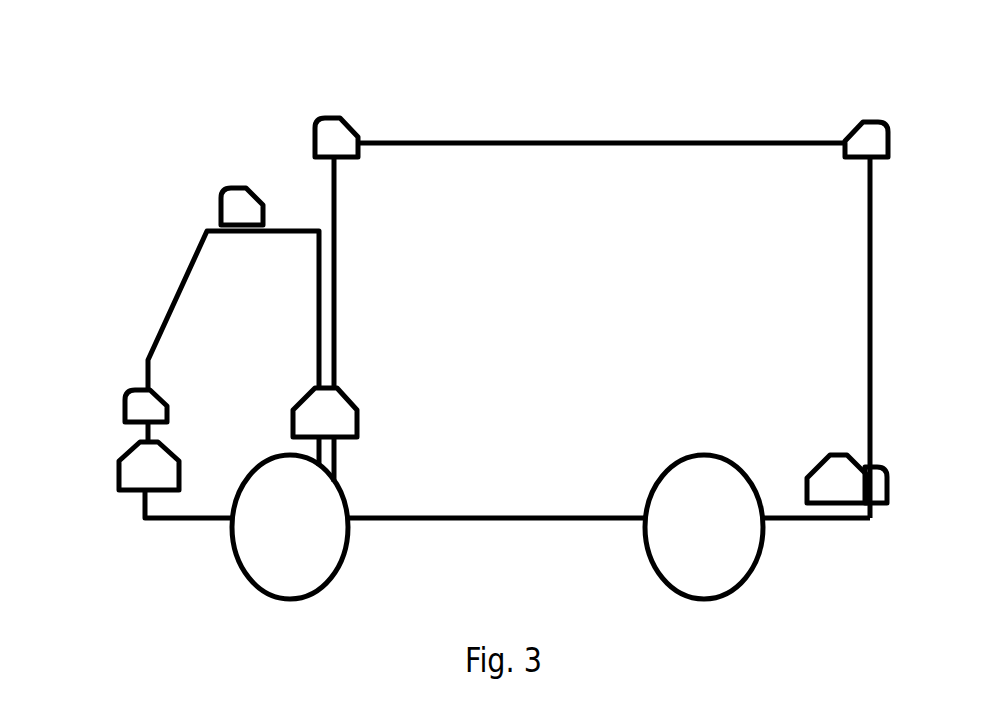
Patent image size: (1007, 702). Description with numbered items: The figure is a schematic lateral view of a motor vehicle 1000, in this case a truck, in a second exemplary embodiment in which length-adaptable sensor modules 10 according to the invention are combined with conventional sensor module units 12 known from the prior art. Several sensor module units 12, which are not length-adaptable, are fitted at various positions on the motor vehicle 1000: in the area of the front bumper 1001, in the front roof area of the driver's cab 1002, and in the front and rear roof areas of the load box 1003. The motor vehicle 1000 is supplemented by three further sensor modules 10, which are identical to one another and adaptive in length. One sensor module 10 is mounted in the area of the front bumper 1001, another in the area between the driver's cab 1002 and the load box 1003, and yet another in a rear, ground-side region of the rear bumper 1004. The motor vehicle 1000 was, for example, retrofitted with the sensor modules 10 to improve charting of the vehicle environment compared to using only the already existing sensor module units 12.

The motor vehicle 1000 is at (232, 75).
The sensor module 10 is at (142, 472).
The sensor module unit 12 is at (323, 143).
The front bumper 1001 is at (145, 433).
The driver's cab 1002 is at (193, 312).
The load box 1003 is at (493, 180).
The rear bumper 1004 is at (873, 463).